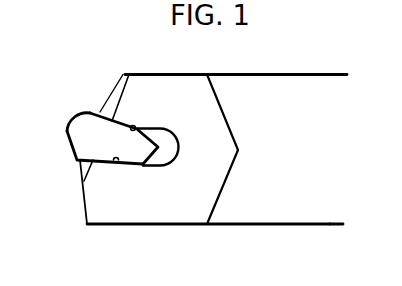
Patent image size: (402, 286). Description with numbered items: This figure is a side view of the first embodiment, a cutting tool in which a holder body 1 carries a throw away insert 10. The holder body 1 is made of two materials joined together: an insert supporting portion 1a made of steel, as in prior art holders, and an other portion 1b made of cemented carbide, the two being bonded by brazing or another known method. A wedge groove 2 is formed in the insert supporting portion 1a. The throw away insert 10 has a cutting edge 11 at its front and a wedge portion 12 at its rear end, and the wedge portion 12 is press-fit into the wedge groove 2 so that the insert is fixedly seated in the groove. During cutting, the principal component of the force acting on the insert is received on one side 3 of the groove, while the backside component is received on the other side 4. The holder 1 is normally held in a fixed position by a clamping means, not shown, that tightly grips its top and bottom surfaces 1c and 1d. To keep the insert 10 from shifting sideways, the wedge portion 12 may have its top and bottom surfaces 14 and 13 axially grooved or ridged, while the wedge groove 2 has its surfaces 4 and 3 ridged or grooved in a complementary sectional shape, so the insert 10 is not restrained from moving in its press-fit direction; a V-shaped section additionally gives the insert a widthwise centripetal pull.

The holder body 1 is at (213, 150).
The insert supporting portion 1a is at (218, 201).
The other portion 1b is at (283, 203).
The top surface 1c is at (305, 73).
The bottom surface 1d is at (326, 225).
The wedge groove 2 is at (155, 157).
The one side of the groove 3 is at (117, 163).
The other side of the groove 4 is at (134, 126).
The throw away insert 10 is at (92, 170).
The cutting edge 11 is at (67, 131).
The wedge portion 12 is at (100, 130).
The bottom surface of the wedge portion 13 is at (92, 167).
The top surface of the wedge portion 14 is at (128, 74).